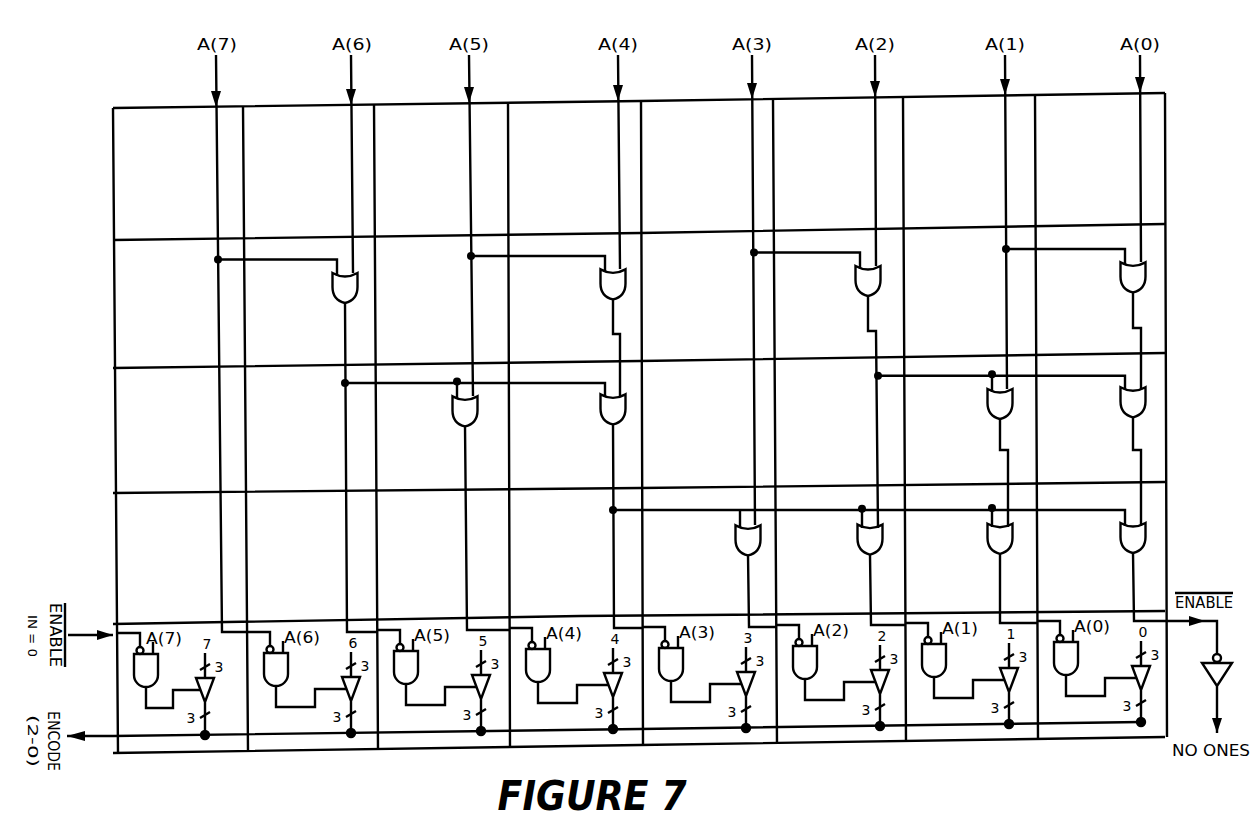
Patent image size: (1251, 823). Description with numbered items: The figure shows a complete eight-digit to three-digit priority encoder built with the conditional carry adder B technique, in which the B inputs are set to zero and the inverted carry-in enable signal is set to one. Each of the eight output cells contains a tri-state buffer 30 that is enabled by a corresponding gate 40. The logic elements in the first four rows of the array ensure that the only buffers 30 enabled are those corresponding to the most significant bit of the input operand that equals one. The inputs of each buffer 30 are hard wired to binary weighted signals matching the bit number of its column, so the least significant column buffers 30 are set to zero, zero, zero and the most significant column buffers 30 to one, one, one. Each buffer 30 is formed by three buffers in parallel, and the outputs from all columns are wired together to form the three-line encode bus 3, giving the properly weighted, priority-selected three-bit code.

The tri-state buffer 30 is at (673, 690).
The gate 40 is at (627, 675).
The 3-bit encode bus 3 is at (97, 740).